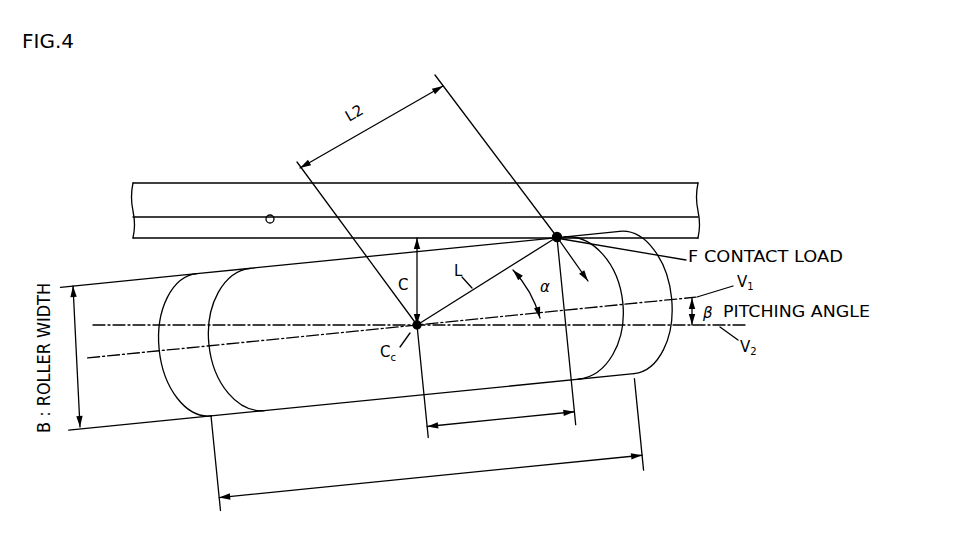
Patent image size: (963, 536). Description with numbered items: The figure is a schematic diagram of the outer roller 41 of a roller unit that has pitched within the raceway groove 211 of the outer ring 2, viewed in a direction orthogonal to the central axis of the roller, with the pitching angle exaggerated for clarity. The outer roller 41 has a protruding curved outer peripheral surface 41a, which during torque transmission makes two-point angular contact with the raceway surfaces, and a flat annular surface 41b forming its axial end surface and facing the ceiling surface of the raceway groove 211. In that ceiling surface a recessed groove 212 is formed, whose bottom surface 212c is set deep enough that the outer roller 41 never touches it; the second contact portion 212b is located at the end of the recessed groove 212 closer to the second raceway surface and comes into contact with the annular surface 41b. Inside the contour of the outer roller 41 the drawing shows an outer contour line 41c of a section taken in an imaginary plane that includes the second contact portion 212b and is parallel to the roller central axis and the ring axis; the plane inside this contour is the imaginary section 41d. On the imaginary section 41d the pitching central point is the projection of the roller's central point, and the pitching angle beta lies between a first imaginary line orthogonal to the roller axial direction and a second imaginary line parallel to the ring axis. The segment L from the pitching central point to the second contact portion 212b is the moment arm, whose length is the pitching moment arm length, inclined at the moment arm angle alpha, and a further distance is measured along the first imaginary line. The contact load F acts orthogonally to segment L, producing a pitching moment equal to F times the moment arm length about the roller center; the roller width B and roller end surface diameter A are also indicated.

The outer ring 2 is at (161, 180).
The recessed groove 212 is at (144, 222).
The raceway groove 211 is at (148, 260).
The bottom surface of the recessed groove 212c is at (266, 215).
The second contact portion 212b is at (558, 235).
The outer roller 41 is at (662, 370).
The outer peripheral surface 41a is at (621, 303).
The annular surface 41b is at (181, 347).
The outer contour line 41c is at (233, 341).
The imaginary section 41d is at (422, 395).